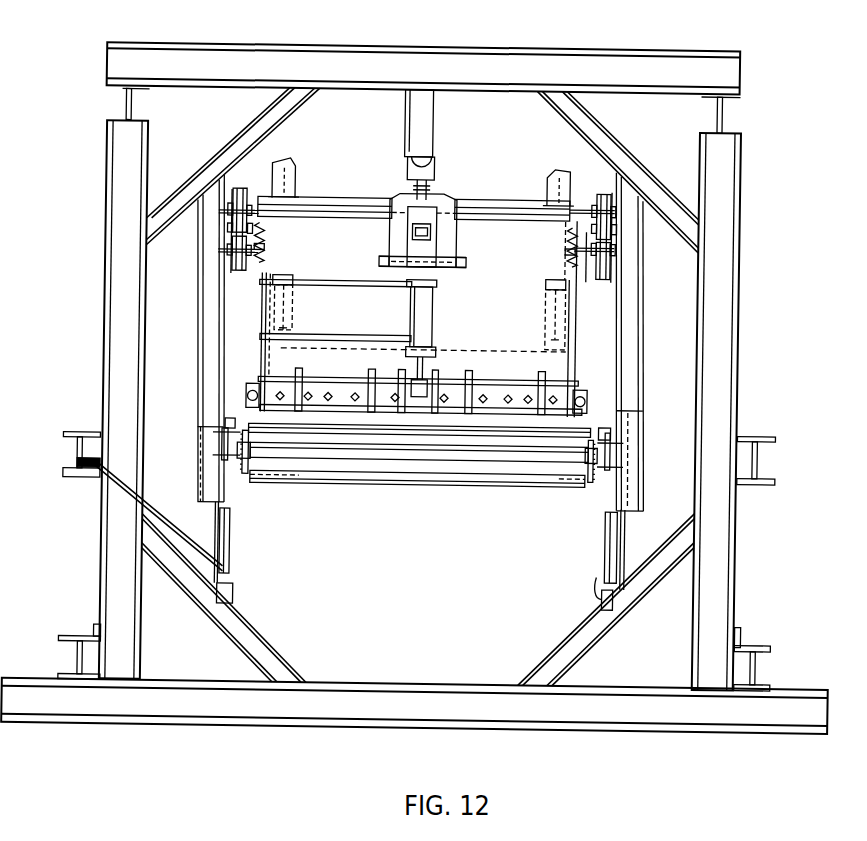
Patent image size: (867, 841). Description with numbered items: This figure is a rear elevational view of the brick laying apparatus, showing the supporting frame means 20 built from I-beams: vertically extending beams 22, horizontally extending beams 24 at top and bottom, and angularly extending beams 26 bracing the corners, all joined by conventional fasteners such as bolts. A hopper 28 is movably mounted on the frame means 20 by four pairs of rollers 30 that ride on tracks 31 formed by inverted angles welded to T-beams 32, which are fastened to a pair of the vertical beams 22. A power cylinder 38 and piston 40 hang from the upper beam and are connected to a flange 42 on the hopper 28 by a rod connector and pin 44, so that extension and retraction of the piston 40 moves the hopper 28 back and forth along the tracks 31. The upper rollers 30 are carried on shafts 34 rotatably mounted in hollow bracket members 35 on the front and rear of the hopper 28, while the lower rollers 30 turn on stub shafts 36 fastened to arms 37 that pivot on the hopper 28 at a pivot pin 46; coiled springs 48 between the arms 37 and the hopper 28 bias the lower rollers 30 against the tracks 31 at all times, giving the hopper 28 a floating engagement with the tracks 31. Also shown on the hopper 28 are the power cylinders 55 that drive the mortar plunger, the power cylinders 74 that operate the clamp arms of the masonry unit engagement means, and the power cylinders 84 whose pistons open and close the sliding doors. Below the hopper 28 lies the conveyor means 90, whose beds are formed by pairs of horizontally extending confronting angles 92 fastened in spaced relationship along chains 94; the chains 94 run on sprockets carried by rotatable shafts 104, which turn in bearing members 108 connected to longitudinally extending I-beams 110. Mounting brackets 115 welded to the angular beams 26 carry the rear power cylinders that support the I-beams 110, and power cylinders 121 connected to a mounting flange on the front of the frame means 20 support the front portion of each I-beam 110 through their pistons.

The supporting frame means 20 is at (410, 46).
The vertically extending beams 22 is at (112, 233).
The horizontally extending beams 24 is at (185, 65).
The angularly extending beams 26 is at (241, 138).
The hopper 28 is at (415, 197).
The rollers 30 is at (237, 196).
The tracks 31 is at (229, 221).
The T-beams 32 is at (226, 248).
The shafts 34 is at (481, 209).
The hollow bracket members 35 is at (342, 214).
The stub shafts 36 is at (256, 274).
The arms 37 is at (285, 282).
The power cylinder 38 is at (419, 117).
The piston 40 is at (429, 182).
The flange 42 is at (413, 200).
The pin 44 is at (437, 187).
The pivot pin 46 is at (264, 240).
The coiled springs 48 is at (264, 250).
The power cylinders 55 is at (289, 282).
The power cylinders 74 is at (430, 312).
The power cylinders 84 is at (252, 388).
The conveyor means 90 is at (417, 474).
The confronting angles 92 is at (358, 482).
The chains 94 is at (255, 472).
The rotatable shafts 104 is at (390, 456).
The bearing members 108 is at (248, 479).
The I-beams 110 is at (216, 443).
The mounting brackets 115 is at (239, 596).
The power cylinders 121 is at (235, 528).